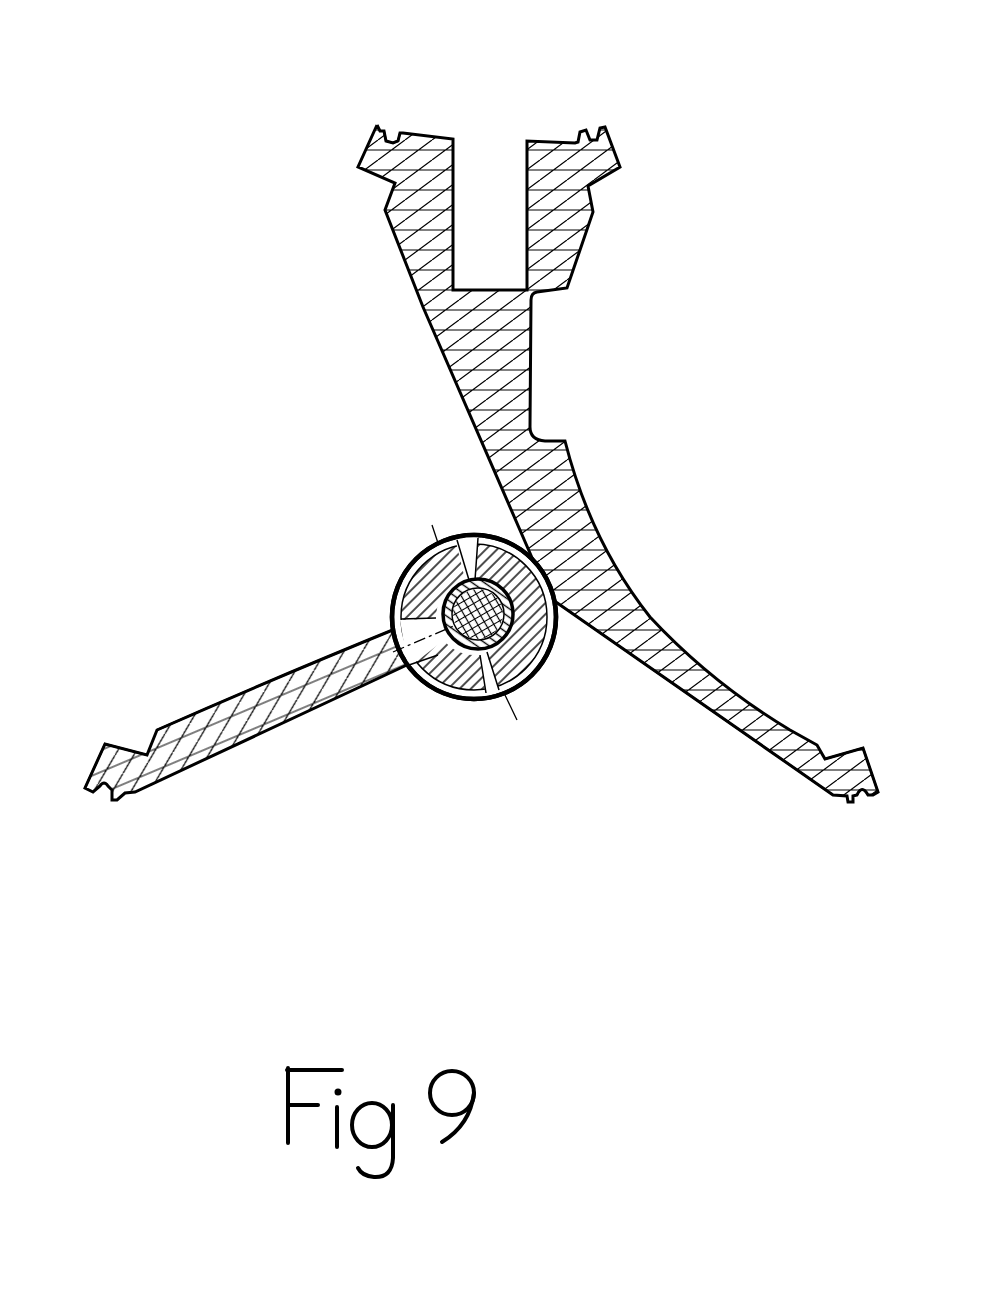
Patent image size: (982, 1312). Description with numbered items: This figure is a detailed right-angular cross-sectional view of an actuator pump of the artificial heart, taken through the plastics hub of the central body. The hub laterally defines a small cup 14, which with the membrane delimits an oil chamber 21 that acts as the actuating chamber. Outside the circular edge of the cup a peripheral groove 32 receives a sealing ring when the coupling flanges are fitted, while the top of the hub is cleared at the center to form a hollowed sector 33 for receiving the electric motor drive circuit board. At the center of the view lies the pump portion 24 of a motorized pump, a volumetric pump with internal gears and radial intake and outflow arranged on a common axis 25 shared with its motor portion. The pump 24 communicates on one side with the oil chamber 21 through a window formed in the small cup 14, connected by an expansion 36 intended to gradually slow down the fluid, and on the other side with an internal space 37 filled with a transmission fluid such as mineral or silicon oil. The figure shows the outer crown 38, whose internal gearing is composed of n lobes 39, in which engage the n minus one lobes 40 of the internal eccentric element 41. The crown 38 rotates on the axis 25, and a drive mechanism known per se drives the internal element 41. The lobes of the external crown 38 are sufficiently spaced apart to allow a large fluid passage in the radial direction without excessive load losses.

The small cup 14 is at (190, 713).
The oil chamber 21 is at (405, 437).
The pump portion 24 is at (458, 639).
The common axis 25 is at (477, 538).
The peripheral groove 32 is at (392, 133).
The hollowed sector 33 is at (462, 167).
The expansion 36 is at (315, 657).
The internal space 37 is at (667, 780).
The outer crown 38 is at (497, 700).
The lobes 39 is at (443, 698).
The lobes 40 is at (495, 634).
The internal eccentric element 41 is at (527, 682).